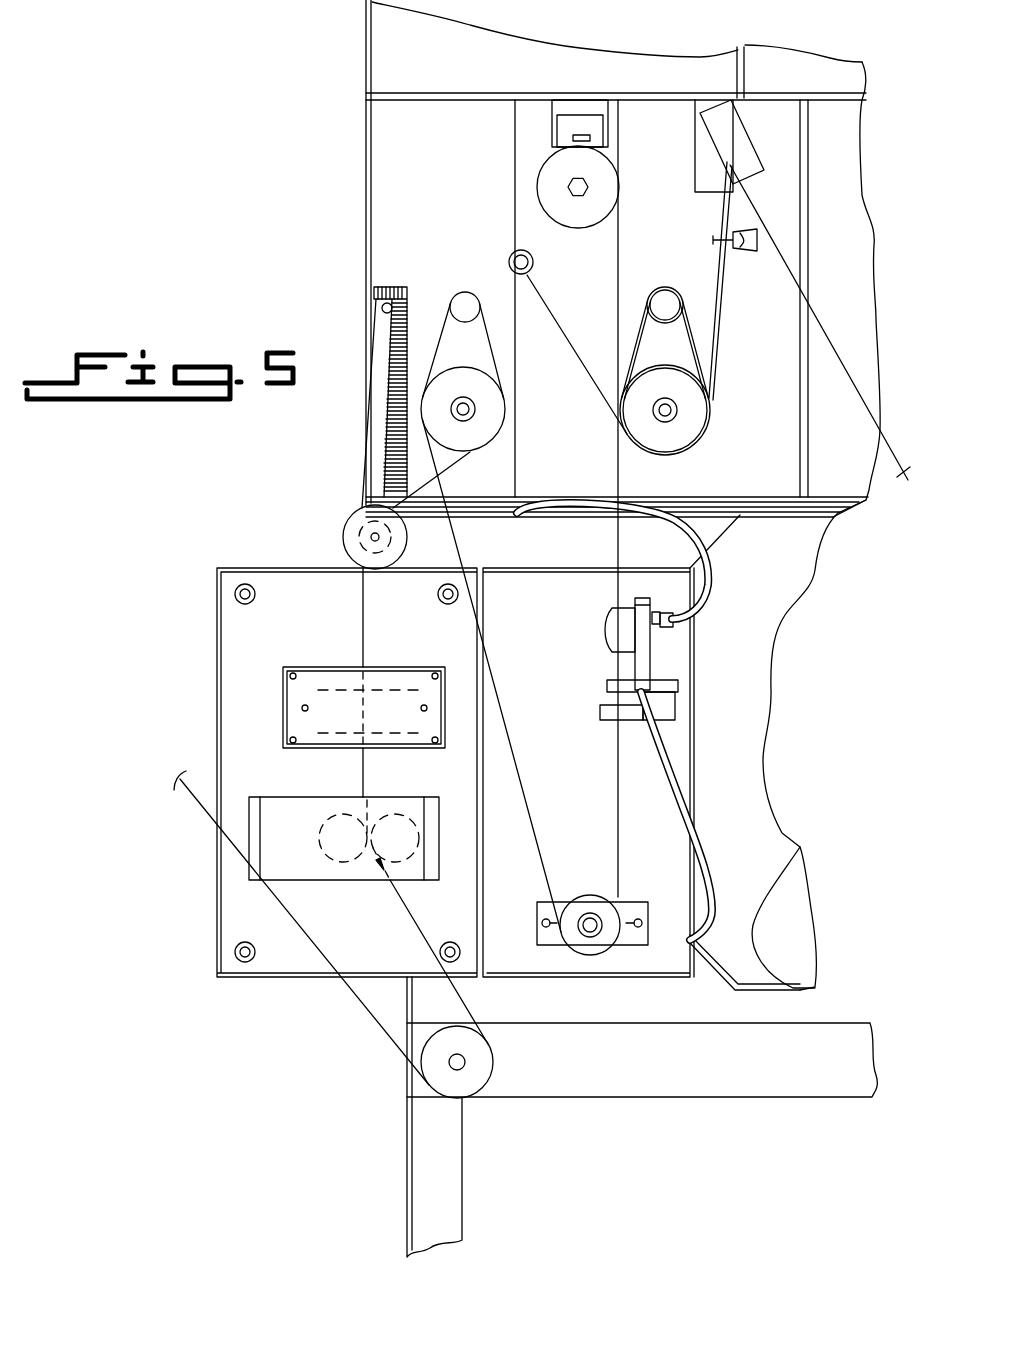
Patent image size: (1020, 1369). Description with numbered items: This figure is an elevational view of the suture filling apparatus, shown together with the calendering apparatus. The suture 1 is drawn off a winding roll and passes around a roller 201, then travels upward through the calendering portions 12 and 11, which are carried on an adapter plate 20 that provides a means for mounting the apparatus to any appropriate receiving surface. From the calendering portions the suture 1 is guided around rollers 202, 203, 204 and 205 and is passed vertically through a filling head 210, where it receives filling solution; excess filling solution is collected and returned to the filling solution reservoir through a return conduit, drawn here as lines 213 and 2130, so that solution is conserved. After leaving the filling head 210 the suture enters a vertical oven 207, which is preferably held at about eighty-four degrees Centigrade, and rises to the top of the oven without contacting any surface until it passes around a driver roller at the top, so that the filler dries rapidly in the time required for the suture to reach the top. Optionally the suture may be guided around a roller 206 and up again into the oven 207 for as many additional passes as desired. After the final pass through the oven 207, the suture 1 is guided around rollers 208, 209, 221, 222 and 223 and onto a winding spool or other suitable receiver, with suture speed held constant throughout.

The suture 1 is at (514, 147).
The calendering portion 11 is at (302, 669).
The calendering portion 12 is at (280, 797).
The adapter plate 20 is at (317, 608).
The roller 201 is at (463, 1077).
The roller 202 is at (353, 523).
The roller 203 is at (494, 412).
The roller 204 is at (467, 300).
The roller 205 is at (600, 943).
The roller 206 is at (590, 182).
The vertical oven 207 is at (503, 78).
The roller 208 is at (529, 272).
The roller 209 is at (682, 437).
The filling head 210 is at (620, 630).
The air hose 213 is at (713, 592).
The air hose 2130 is at (703, 831).
The roller 221 is at (665, 302).
The roller 222 is at (753, 230).
The roller 223 is at (752, 163).